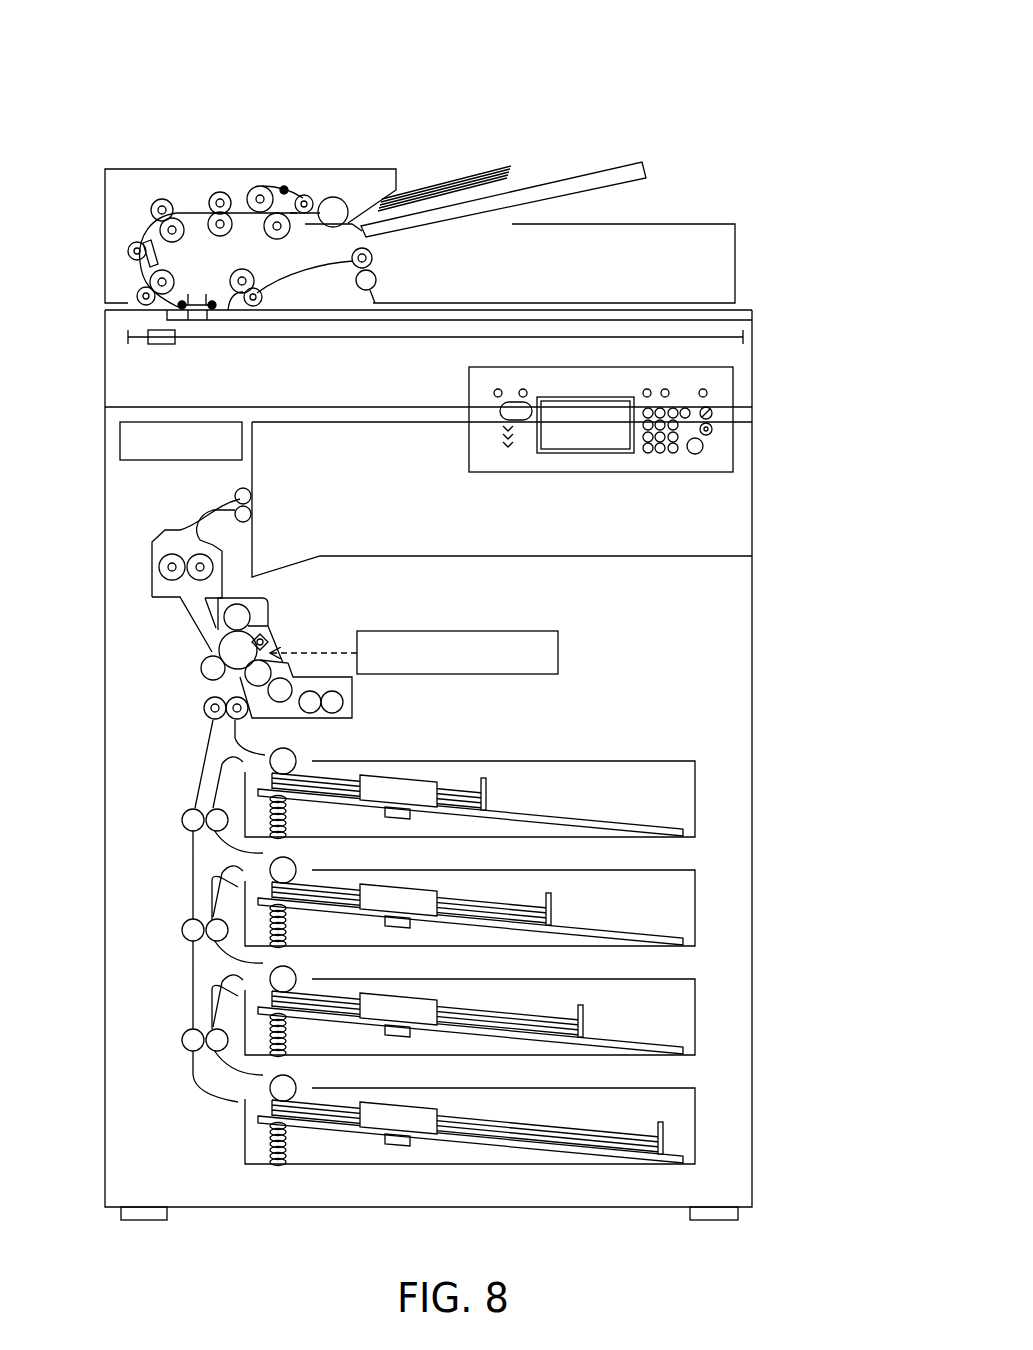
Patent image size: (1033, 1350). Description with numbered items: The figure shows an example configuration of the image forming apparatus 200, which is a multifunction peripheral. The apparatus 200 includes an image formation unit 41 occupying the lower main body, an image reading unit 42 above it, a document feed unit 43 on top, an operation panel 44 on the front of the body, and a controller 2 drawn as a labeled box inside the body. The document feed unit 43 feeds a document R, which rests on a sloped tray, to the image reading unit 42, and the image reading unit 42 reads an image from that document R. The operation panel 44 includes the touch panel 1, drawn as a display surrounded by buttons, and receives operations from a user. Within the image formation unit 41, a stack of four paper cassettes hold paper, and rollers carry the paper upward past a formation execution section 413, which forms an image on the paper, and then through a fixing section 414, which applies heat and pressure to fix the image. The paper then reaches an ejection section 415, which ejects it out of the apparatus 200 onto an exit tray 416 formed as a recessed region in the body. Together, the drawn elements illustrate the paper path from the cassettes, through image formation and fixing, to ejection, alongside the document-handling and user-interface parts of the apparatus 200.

The image forming apparatus 200 is at (715, 88).
The document feed unit 43 is at (435, 152).
The document R is at (495, 178).
The image reading unit 42 is at (758, 350).
The image formation unit 41 is at (782, 603).
The controller 2 is at (120, 435).
The touch panel 1 is at (557, 397).
The operation panel 44 is at (603, 474).
The paper discharge tray 416 is at (508, 556).
The ejection section 415 is at (245, 496).
The fixing section 414 is at (222, 567).
The formation execution section 413 is at (283, 622).